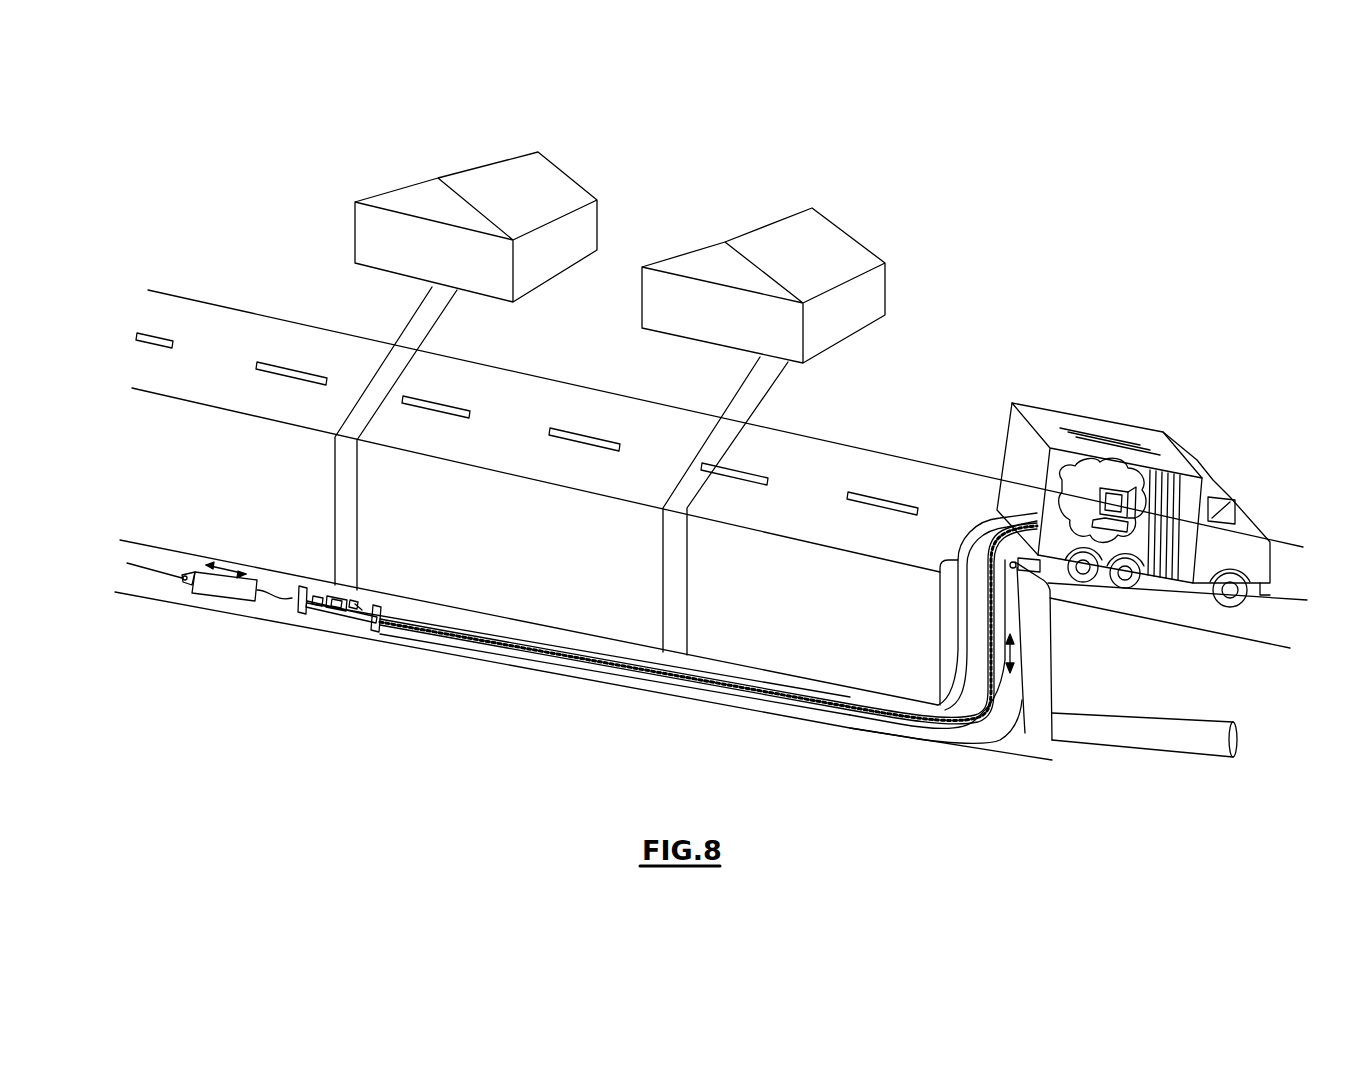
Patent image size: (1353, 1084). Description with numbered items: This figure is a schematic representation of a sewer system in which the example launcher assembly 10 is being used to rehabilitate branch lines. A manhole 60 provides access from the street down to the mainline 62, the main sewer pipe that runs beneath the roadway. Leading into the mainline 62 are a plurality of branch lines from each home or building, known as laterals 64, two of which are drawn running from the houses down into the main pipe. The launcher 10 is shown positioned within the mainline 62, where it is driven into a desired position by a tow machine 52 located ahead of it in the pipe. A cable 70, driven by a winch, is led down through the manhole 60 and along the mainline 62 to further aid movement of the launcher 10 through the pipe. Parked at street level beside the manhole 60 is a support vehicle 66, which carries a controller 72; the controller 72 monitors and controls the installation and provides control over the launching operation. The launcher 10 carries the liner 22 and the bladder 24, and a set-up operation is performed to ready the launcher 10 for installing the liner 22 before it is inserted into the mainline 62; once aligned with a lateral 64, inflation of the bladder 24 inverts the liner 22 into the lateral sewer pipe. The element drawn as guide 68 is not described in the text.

The launcher assembly 10 is at (320, 619).
The liner 22 is at (998, 702).
The bladder 24 is at (977, 697).
The tow machine 52 is at (223, 587).
The manhole 60 is at (1043, 700).
The mainline 62 is at (912, 744).
The laterals 64 is at (352, 518).
The support vehicle 66 is at (1182, 567).
The guide tube 68 is at (956, 663).
The cable 70 is at (1025, 625).
The controller 72 is at (1104, 478).